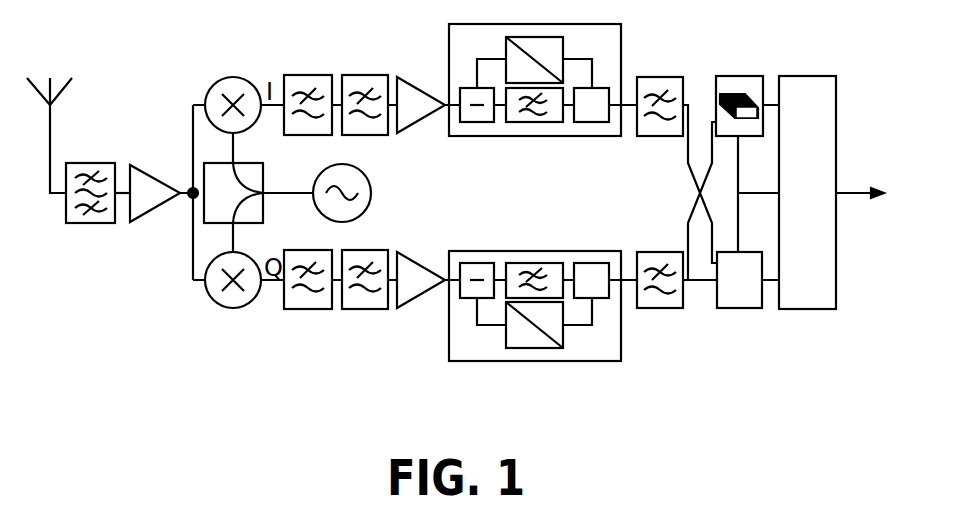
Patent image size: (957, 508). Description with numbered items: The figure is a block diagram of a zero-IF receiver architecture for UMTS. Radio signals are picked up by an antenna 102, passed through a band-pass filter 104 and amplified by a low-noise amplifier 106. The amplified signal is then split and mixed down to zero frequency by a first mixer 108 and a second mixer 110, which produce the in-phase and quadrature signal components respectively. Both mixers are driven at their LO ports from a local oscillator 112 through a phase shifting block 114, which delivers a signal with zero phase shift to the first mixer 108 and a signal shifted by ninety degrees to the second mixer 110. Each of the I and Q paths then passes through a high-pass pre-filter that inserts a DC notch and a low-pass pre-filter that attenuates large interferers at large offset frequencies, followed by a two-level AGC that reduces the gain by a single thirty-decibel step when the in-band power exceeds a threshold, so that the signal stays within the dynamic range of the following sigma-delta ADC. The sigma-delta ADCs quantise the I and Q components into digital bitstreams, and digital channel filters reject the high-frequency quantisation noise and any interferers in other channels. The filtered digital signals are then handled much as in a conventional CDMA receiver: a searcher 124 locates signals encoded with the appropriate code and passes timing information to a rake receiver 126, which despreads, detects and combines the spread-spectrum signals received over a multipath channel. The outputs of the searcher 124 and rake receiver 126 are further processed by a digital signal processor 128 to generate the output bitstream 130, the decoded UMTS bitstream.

The antenna 102 is at (72, 82).
The band-pass filter 104 is at (83, 224).
The low-noise amplifier 106 is at (150, 203).
The first mixer 108 is at (223, 76).
The second mixer 110 is at (207, 290).
The local oscillator 112 is at (360, 212).
The phase shifting block 114 is at (255, 215).
The searcher 124 is at (733, 310).
The rake receiver 126 is at (735, 77).
The digital signal processor 128 is at (802, 310).
The output bitstream 130 is at (847, 197).